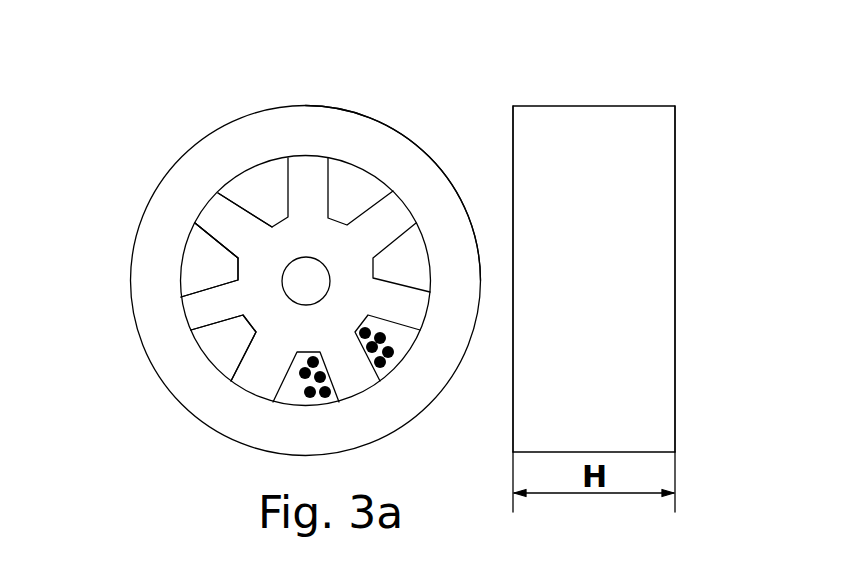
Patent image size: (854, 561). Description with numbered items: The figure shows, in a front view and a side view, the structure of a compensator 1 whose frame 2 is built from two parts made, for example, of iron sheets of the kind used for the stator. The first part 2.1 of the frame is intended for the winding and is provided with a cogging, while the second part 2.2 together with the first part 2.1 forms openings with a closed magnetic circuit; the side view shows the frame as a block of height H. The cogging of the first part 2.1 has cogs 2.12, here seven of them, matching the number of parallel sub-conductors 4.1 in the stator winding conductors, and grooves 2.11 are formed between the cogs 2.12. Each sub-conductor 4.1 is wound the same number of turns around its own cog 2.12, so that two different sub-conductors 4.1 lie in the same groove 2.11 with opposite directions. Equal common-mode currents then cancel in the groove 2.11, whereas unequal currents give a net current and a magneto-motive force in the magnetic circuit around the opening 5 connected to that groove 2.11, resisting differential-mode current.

The compensator 1 is at (312, 100).
The frame 2 is at (128, 267).
The first part of the frame 2.1 is at (277, 240).
The second part of the frame 2.2 is at (398, 150).
The groove 2.11 is at (218, 268).
The cog 2.12 is at (202, 216).
The sub-conductor 4.1 is at (322, 400).
The opening 5 is at (215, 354).